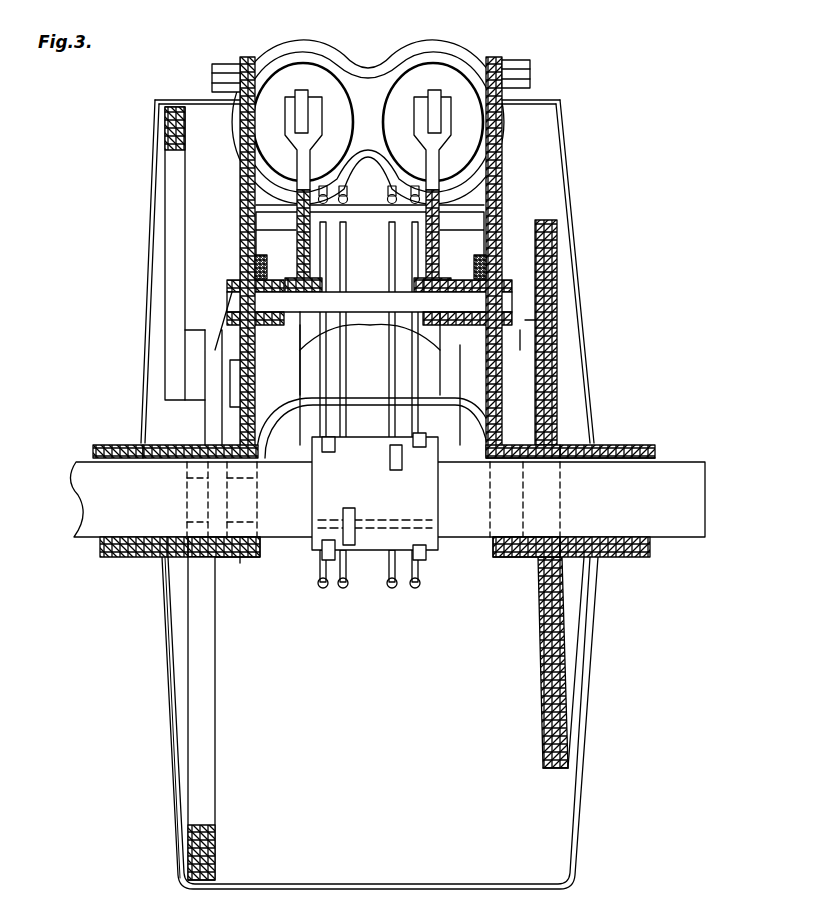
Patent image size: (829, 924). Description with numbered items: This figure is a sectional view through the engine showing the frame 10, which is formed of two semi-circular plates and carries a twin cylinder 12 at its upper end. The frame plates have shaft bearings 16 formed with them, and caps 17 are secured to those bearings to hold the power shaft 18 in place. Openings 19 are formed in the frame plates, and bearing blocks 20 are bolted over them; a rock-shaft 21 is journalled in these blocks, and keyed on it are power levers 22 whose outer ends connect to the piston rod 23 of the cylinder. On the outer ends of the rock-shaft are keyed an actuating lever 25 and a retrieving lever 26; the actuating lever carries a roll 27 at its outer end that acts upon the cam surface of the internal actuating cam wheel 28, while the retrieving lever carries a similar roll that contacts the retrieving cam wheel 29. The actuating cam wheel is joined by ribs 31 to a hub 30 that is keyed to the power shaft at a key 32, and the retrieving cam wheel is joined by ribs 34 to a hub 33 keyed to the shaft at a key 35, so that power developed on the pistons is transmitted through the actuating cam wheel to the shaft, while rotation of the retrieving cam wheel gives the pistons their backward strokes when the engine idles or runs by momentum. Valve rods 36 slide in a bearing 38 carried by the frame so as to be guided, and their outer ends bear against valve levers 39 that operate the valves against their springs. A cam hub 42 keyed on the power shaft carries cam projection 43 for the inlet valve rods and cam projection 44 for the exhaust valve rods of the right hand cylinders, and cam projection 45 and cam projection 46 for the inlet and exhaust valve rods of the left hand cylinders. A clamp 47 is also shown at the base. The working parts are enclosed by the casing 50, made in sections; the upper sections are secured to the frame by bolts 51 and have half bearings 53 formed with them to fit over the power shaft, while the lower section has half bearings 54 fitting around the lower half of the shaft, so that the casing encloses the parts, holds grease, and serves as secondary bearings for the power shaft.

The frame 10 is at (240, 168).
The twin cylinder 12 is at (400, 52).
The shaft bearing 16 is at (205, 420).
The cap 17 is at (510, 557).
The power shaft 18 is at (690, 530).
The opening 19 is at (255, 268).
The bearing block 20 is at (240, 245).
The rock-shaft 21 is at (372, 300).
The power lever 22 is at (425, 145).
The piston rod 23 is at (302, 92).
The actuating lever 25 is at (227, 298).
The retrieving lever 26 is at (540, 322).
The roll 27 is at (185, 340).
The internal actuating cam wheel 28 is at (215, 840).
The retrieving cam wheel 29 is at (543, 748).
The hub 30 is at (166, 560).
The rib 31 is at (165, 393).
The key 32 is at (187, 462).
The hub 33 is at (592, 440).
The rib 34 is at (560, 415).
The key 35 is at (582, 462).
The valve rod 36 is at (404, 258).
The bearing 38 is at (297, 450).
The valve lever 39 is at (330, 192).
The cam hub 42 is at (316, 548).
The cam projection 43 is at (402, 465).
The cam projection 44 is at (428, 448).
The cam projection 45 is at (357, 525).
The cam projection 46 is at (320, 594).
The clamp 47 is at (244, 557).
The casing 50 is at (152, 190).
The bolt 51 is at (212, 76).
The half bearing 53 is at (100, 445).
The half bearing 54 is at (136, 557).